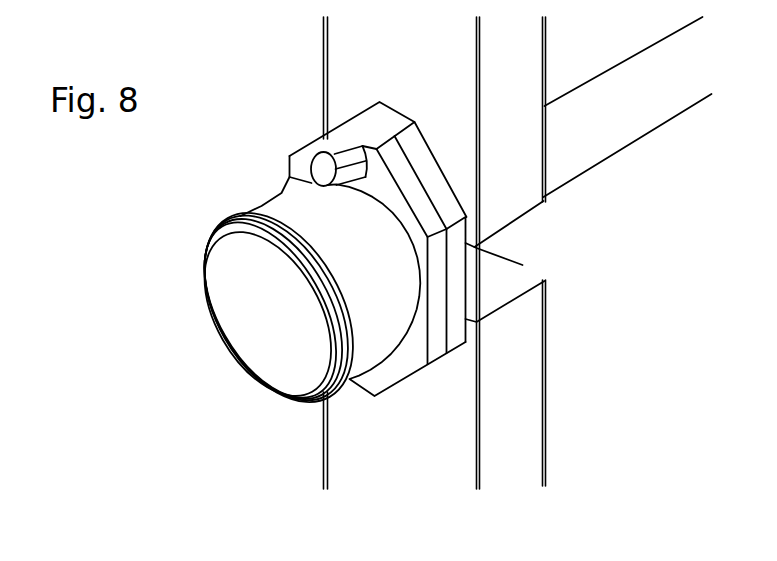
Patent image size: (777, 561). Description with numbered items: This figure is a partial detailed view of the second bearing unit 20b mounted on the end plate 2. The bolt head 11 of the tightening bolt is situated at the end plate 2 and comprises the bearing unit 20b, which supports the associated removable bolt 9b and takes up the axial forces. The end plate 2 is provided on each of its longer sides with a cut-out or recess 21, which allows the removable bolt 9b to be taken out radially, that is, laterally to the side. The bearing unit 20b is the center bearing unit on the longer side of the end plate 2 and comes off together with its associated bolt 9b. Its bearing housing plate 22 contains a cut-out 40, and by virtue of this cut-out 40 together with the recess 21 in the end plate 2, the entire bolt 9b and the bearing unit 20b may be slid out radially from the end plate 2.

The end plate 2 is at (523, 438).
The removable bolt 9b is at (620, 117).
The bolt head 11 is at (222, 422).
The bearing unit 20b is at (223, 322).
The cut-out or recess 21 is at (523, 266).
The bearing housing plate 22 is at (461, 202).
The cut-out 40 is at (323, 142).